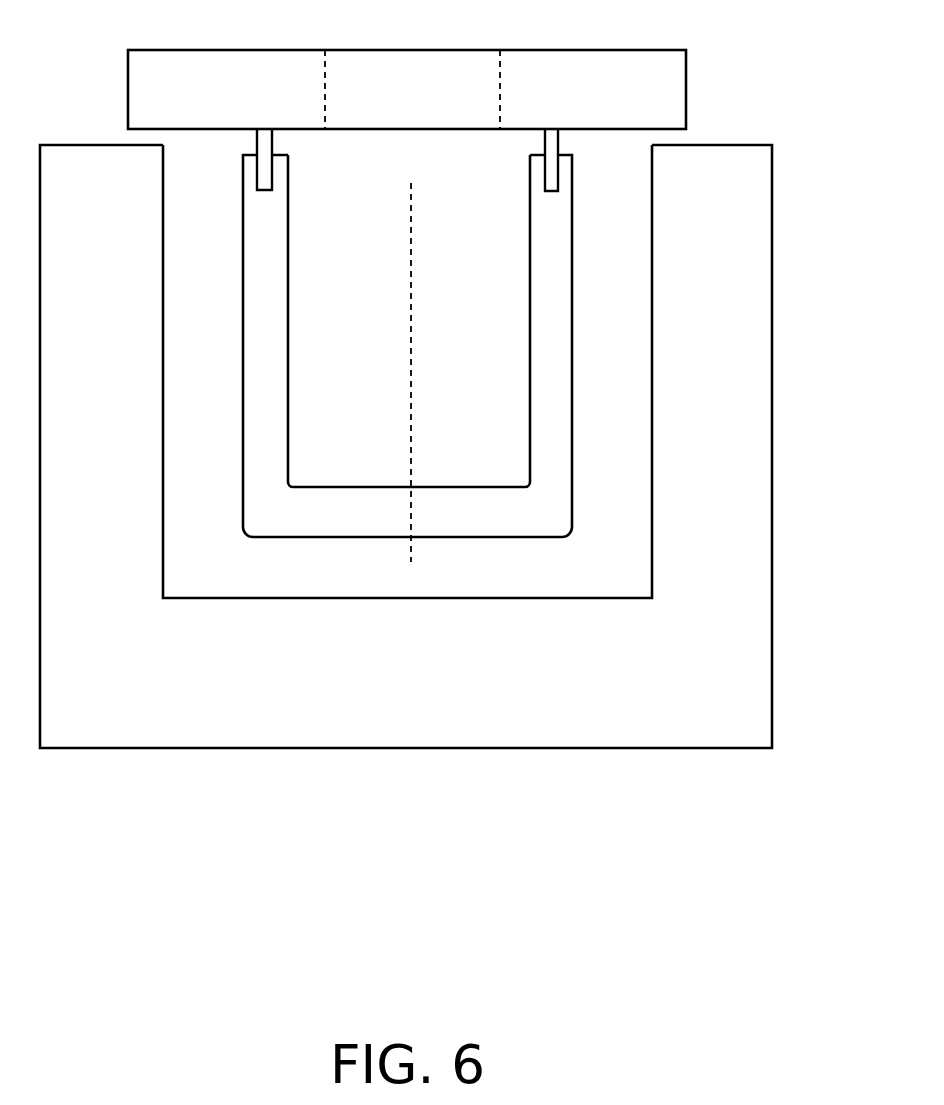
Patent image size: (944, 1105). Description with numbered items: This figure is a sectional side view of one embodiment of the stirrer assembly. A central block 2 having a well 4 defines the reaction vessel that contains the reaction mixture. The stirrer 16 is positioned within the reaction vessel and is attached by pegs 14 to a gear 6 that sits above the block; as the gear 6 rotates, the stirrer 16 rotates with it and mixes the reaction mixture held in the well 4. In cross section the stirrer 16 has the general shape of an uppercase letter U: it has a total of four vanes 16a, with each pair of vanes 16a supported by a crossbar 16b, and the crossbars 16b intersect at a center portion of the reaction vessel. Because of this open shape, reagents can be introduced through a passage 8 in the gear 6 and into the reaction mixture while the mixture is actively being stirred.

The central block 2 is at (757, 323).
The well 4 is at (630, 552).
The gear 6 is at (592, 70).
The passage 8 is at (453, 70).
The pegs 14 is at (558, 167).
The stirrer 16 is at (560, 262).
The vanes 16a is at (558, 350).
The crossbar 16b is at (425, 515).